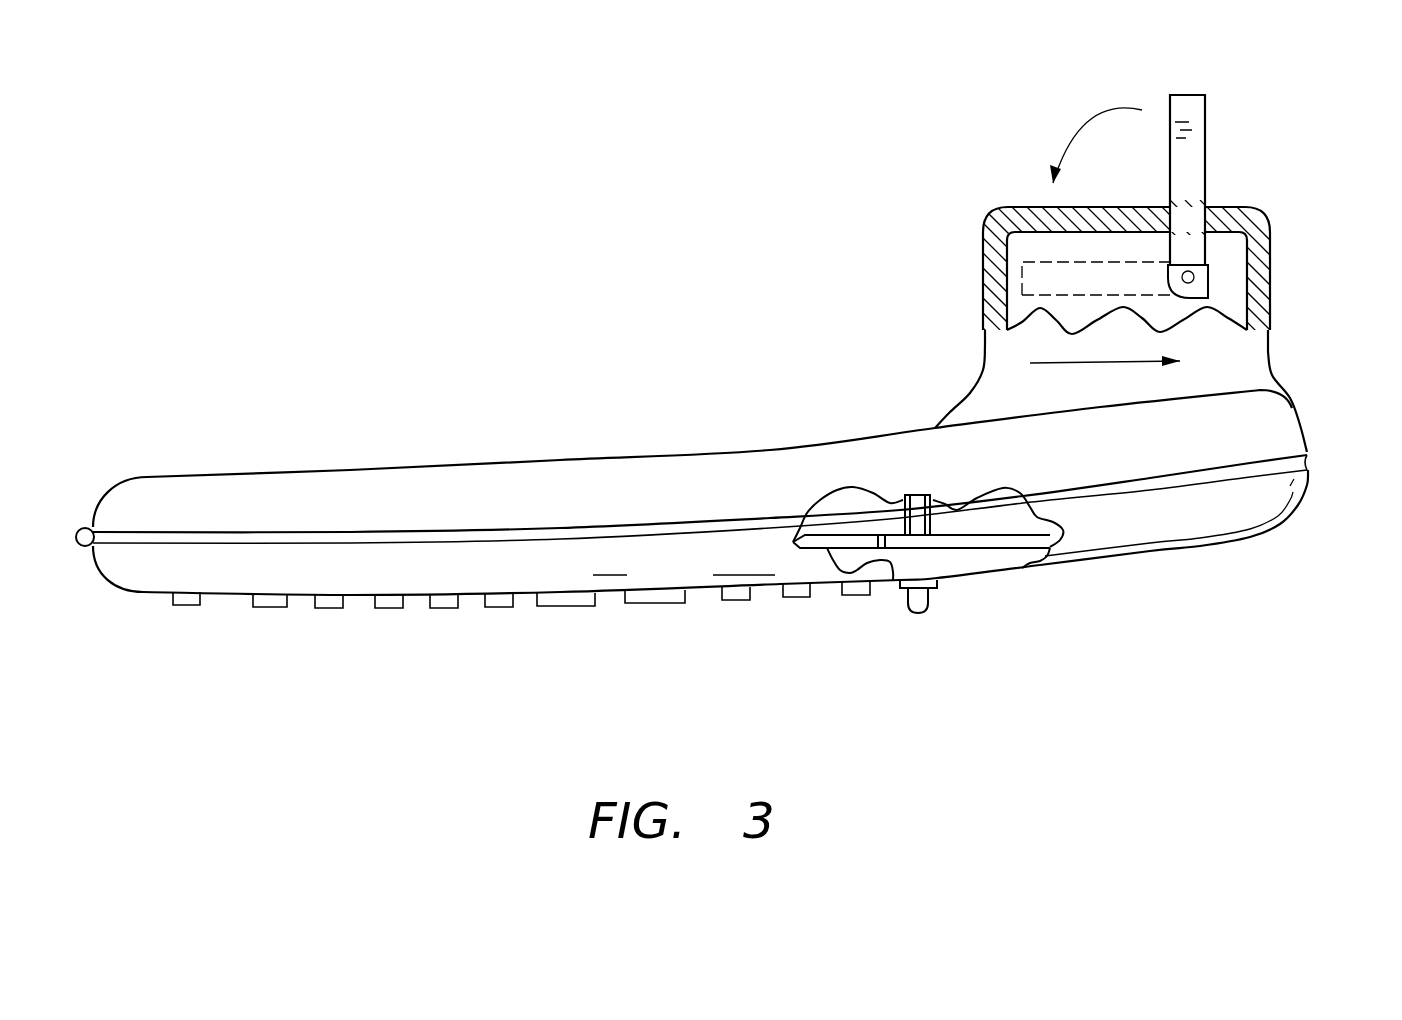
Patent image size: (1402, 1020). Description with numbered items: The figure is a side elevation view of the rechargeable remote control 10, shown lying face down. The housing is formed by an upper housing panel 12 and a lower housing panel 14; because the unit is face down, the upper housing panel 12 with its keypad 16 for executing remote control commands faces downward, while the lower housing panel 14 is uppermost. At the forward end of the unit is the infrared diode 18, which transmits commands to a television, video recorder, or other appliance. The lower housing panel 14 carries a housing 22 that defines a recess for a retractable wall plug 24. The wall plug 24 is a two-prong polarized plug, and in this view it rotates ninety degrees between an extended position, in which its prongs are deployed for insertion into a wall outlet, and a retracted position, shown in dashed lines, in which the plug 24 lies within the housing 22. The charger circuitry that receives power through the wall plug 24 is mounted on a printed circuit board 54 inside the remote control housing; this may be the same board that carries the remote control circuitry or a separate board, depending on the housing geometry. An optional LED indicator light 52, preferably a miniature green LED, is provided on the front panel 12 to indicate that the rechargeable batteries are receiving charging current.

The rechargeable remote control 10 is at (557, 255).
The upper housing panel 12 is at (1222, 508).
The lower housing panel 14 is at (593, 468).
The keypad 16 is at (533, 647).
The infrared diode 18 is at (82, 528).
The housing 22 is at (1270, 298).
The retractable wall plug 24 is at (1198, 173).
The LED indicator light 52 is at (930, 605).
The printed circuit board 54 is at (852, 540).